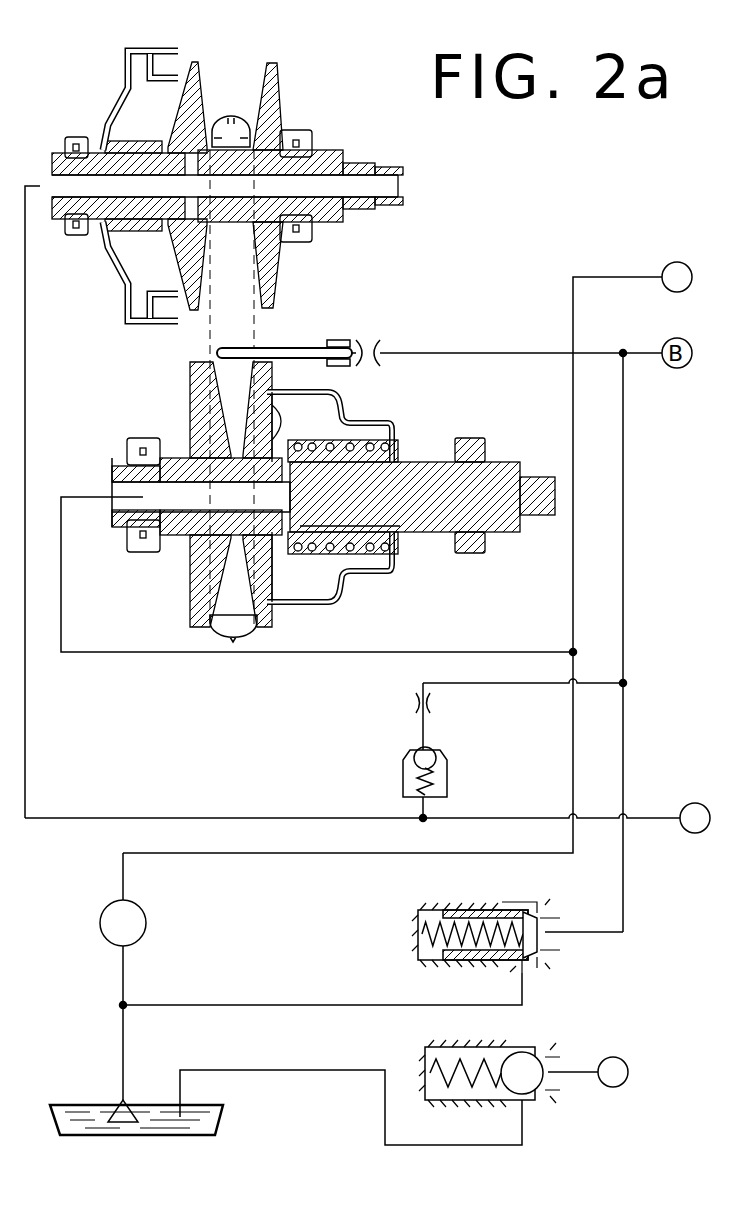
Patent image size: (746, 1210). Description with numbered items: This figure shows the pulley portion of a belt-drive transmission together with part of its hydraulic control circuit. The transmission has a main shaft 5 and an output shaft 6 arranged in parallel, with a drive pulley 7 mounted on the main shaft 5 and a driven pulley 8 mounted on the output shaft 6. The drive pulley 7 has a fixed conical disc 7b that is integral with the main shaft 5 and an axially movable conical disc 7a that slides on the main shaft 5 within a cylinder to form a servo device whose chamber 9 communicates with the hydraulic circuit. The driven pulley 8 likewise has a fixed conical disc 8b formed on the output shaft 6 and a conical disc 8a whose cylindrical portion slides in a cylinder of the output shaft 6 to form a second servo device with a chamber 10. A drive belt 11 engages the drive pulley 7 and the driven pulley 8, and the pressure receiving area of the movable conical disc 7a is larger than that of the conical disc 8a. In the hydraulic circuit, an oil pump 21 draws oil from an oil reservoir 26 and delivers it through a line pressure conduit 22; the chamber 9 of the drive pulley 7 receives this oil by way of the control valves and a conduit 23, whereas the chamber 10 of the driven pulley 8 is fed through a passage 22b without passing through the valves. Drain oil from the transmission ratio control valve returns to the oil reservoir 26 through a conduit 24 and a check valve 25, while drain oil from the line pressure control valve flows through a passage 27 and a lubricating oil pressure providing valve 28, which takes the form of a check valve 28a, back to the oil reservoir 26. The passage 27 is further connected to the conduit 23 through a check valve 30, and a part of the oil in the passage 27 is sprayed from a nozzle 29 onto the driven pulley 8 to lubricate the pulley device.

The main shaft 5 is at (332, 157).
The output shaft 6 is at (483, 485).
The drive pulley 7 is at (255, 162).
The movable conical disc 7a is at (197, 63).
The fixed conical disc 7b is at (279, 103).
The driven pulley 8 is at (212, 506).
The conical disc 8a is at (268, 613).
The fixed conical disc 8b is at (200, 590).
The chamber 9 is at (137, 100).
The chamber 10 is at (358, 563).
The drive belt 11 is at (240, 118).
The oil pump 21 is at (144, 934).
The line pressure conduit 22 is at (575, 276).
The passage 22b is at (445, 651).
The conduit 23 is at (657, 808).
The conduit 24 is at (573, 1070).
The check valve 25 is at (488, 1031).
The oil reservoir 26 is at (218, 1130).
The passage 27 is at (627, 890).
The lubricating oil pressure providing valve 28 is at (518, 920).
The check valve 28a is at (545, 942).
The nozzle 29 is at (283, 347).
The check valve 30 is at (448, 778).